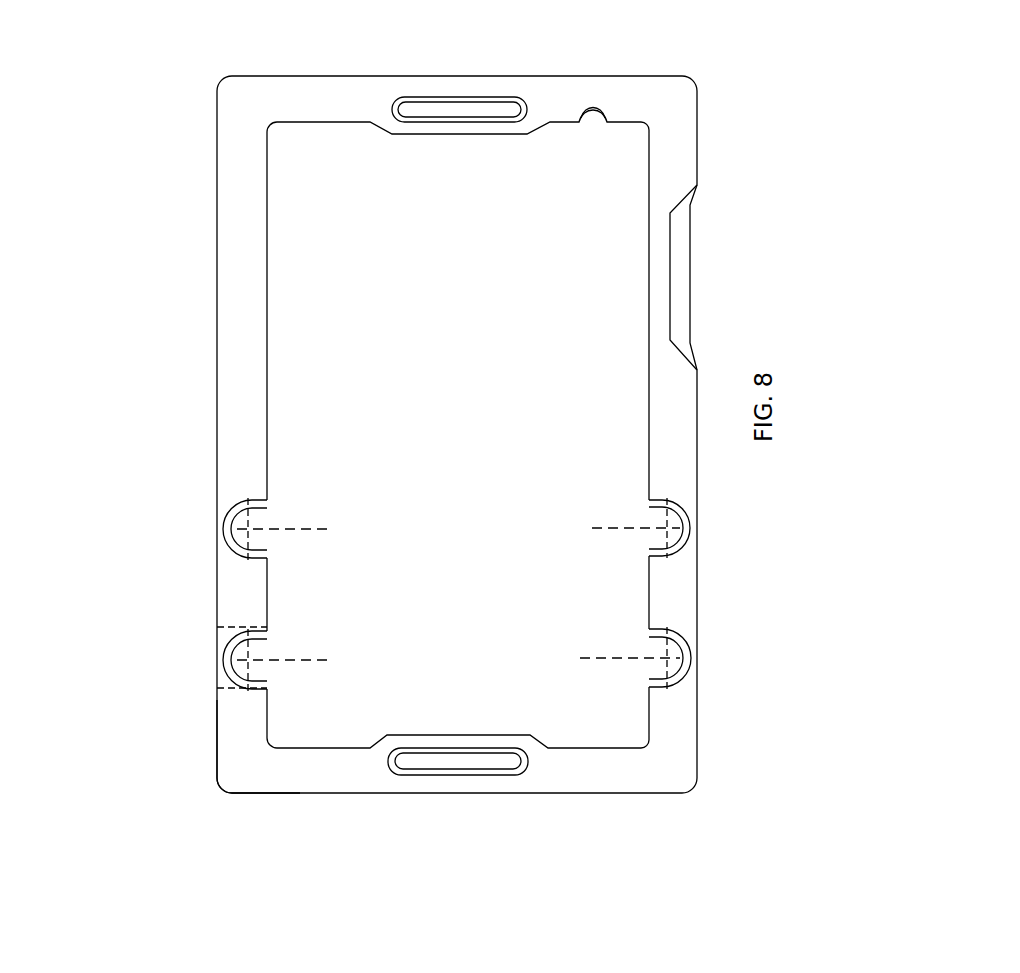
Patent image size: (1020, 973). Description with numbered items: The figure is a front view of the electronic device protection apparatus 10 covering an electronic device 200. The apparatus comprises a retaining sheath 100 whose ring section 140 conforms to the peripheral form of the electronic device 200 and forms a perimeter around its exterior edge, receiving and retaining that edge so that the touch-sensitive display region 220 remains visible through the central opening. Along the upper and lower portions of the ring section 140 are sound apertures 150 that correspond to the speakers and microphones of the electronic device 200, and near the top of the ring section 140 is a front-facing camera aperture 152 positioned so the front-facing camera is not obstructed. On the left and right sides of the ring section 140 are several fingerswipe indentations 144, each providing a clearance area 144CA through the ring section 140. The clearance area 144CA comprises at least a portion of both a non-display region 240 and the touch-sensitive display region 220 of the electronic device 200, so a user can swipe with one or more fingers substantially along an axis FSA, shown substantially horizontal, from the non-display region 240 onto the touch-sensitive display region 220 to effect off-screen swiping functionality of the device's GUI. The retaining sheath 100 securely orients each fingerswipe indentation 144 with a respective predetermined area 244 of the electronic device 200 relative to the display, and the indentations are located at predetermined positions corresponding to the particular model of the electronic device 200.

The electronic device protection apparatus 10 is at (453, 435).
The retaining sheath 100 is at (449, 440).
The ring section 140 is at (238, 733).
The fingerswipe indentation 144 is at (240, 556).
The clearance area 144CA is at (658, 518).
The sound aperture 150 is at (424, 97).
The front-facing camera aperture 152 is at (588, 110).
The electronic device 200 is at (318, 177).
The touch-sensitive display region 220 is at (622, 627).
The non-display region 240 is at (235, 532).
The predetermined area 244 is at (224, 672).
The axis FSA is at (302, 528).